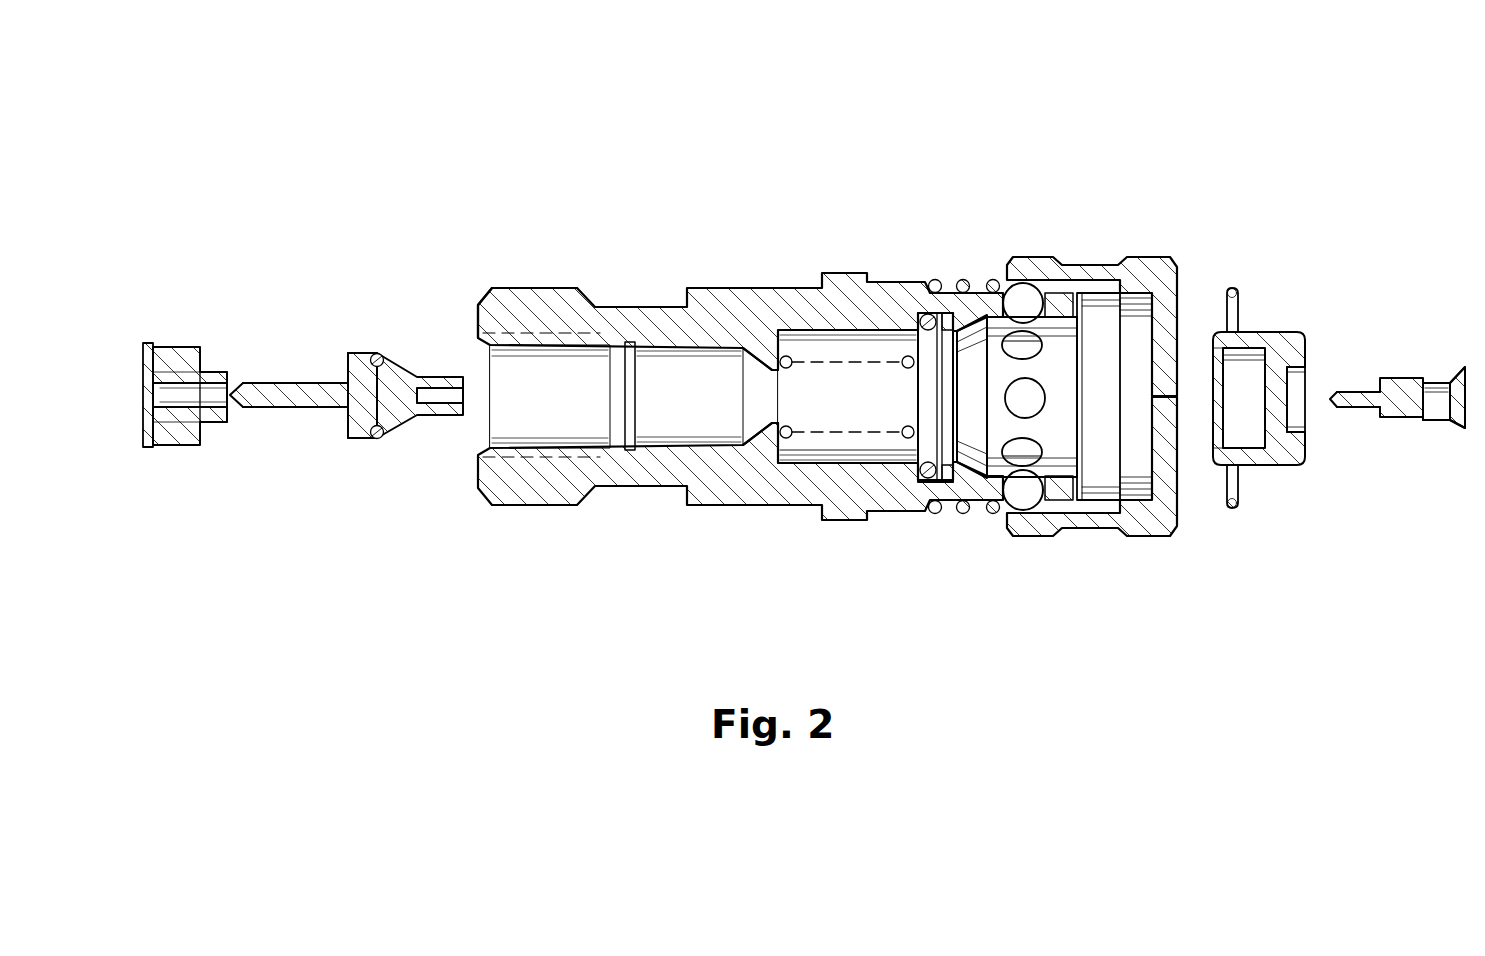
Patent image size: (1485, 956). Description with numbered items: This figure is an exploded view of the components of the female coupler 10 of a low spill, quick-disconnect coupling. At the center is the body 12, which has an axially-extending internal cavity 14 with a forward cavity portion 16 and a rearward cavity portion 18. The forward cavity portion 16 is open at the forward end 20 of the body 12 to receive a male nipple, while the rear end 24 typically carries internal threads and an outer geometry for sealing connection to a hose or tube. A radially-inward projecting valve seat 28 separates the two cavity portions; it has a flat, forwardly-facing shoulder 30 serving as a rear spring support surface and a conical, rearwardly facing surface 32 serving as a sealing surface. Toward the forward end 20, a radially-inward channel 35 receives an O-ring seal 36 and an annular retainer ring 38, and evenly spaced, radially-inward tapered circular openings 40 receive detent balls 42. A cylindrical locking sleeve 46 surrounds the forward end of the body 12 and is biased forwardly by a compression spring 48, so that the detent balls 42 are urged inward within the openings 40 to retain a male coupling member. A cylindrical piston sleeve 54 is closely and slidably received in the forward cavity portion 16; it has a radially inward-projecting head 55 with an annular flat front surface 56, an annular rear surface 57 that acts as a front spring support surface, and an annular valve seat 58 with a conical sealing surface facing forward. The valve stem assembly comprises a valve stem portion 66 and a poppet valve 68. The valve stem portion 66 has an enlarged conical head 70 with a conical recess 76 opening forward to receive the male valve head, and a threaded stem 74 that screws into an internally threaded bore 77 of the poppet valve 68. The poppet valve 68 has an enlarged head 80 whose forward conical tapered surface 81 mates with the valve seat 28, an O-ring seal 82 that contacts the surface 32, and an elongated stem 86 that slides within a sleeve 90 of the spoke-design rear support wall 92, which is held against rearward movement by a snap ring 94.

The female coupler 10 is at (270, 202).
The body 12 is at (635, 487).
The internal cavity 14 is at (790, 340).
The forward cavity portion 16 is at (970, 367).
The rearward cavity portion 18 is at (548, 422).
The forward end 20 is at (1110, 293).
The rear end 24 is at (487, 310).
The valve seat 28 is at (778, 422).
The shoulder 30 is at (777, 453).
The conical rearwardly facing surface 32 is at (735, 425).
The channel 35 is at (937, 475).
The O-ring seal 36 is at (905, 355).
The annular retainer ring 38 is at (948, 318).
The circular openings 40 is at (1038, 345).
The detent balls 42 is at (1023, 303).
The locking sleeve 46 is at (1153, 265).
The compression spring 48 is at (925, 315).
The piston sleeve 54 is at (1272, 484).
The head 55 is at (1303, 418).
The annular flat front surface 56 is at (1305, 380).
The annular rear surface 57 is at (1243, 368).
The annular valve seat 58 is at (1305, 395).
The valve stem portion 66 is at (1393, 361).
The poppet valve 68 is at (297, 360).
The enlarged conical head portion 70 is at (1433, 422).
The threaded stem 74 is at (1355, 407).
The conical recess 76 is at (1457, 397).
The internally threaded bore 77 is at (433, 394).
The enlarged head 80 is at (350, 438).
The forward conical tapered surface 81 is at (385, 360).
The O-ring seal 82 is at (378, 434).
The elongated stem 86 is at (295, 407).
The sleeve 90 is at (218, 421).
The rear support wall 92 is at (175, 347).
The snap ring 94 is at (145, 446).